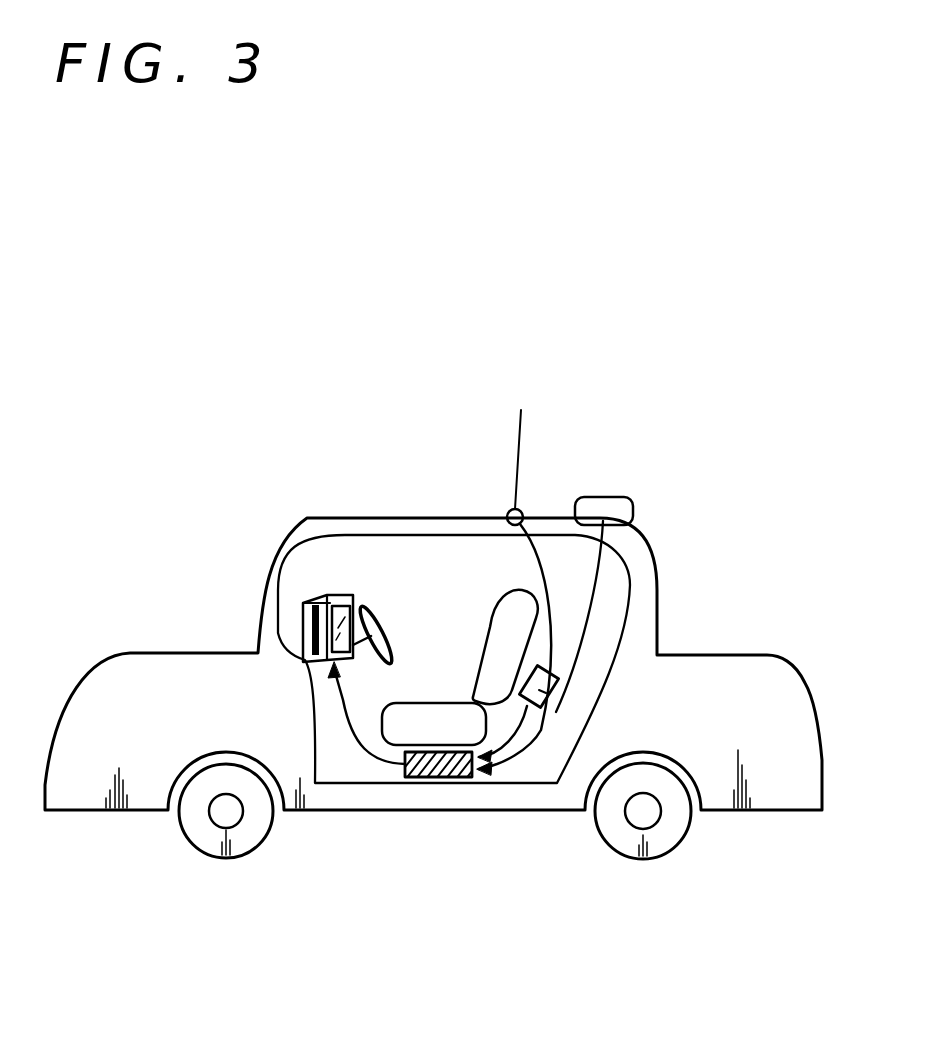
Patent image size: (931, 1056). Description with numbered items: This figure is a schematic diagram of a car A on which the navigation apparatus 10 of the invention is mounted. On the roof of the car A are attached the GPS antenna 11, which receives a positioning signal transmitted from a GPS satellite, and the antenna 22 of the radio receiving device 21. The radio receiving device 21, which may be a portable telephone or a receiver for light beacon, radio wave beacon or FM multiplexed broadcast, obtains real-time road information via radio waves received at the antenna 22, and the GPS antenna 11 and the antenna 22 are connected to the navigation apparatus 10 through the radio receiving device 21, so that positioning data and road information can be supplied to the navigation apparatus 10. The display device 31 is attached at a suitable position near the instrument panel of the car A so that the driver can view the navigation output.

The car A is at (787, 677).
The navigation apparatus 10 is at (444, 778).
The GPS antenna 11 is at (624, 498).
The radio receiving device 21 is at (545, 708).
The antenna 22 is at (518, 437).
The display device 31 is at (306, 663).